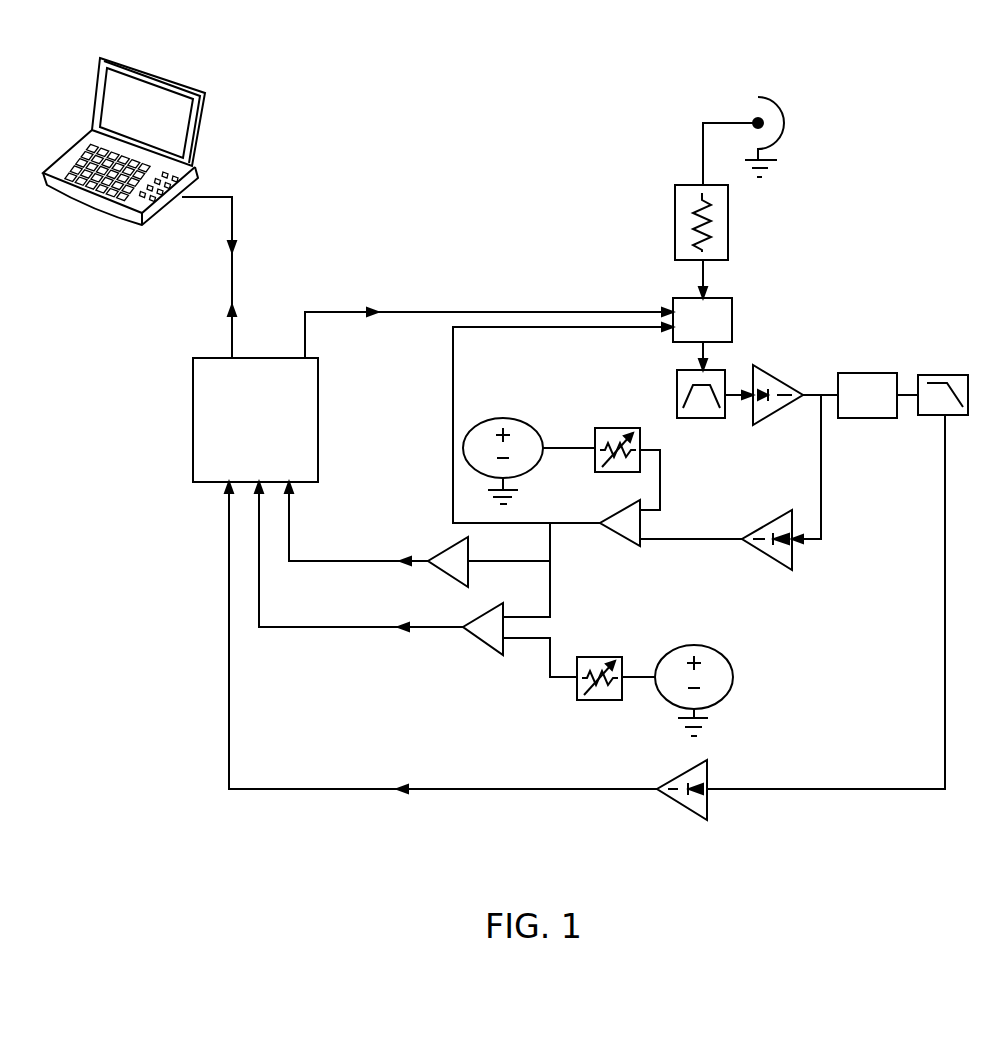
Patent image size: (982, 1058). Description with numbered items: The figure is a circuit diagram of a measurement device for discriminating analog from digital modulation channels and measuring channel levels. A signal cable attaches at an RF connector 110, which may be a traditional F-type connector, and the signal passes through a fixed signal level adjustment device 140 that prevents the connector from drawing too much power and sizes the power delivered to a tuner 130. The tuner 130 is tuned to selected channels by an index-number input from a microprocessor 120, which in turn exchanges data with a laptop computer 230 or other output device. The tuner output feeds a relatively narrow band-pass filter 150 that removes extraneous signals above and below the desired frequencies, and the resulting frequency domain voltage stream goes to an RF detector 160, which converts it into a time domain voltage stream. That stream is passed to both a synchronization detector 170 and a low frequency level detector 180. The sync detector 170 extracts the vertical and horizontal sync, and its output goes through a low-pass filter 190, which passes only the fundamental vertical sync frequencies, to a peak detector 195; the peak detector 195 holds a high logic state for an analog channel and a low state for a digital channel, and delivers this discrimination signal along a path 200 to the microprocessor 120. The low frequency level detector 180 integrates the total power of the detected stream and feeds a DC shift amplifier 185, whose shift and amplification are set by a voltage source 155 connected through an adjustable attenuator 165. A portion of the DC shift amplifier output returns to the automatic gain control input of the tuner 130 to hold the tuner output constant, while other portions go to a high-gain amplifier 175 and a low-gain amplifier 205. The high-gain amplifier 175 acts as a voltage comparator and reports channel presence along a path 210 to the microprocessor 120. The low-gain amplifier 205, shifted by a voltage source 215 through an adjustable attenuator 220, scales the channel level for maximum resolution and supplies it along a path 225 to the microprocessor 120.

The RF connector 110 is at (780, 102).
The microprocessor 120 is at (255, 420).
The tuner 130 is at (702, 320).
The fixed signal level adjustment device 140 is at (728, 222).
The band-pass filter 150 is at (718, 370).
The voltage source 155 is at (488, 417).
The RF detector 160 is at (783, 377).
The adjustable attenuator 165 is at (630, 428).
The synchronization detector 170 is at (867, 395).
The high-gain amplifier 175 is at (450, 543).
The low frequency level detector 180 is at (770, 558).
The DC shift amplifier 185 is at (625, 541).
The low-pass filter 190 is at (955, 375).
The peak detector 195 is at (707, 773).
The path 200 is at (347, 789).
The low-gain amplifier 205 is at (480, 643).
The path 210 is at (327, 562).
The voltage source 215 is at (720, 650).
The adjustable attenuator 220 is at (588, 657).
The path 225 is at (352, 633).
The laptop computer 230 is at (187, 84).